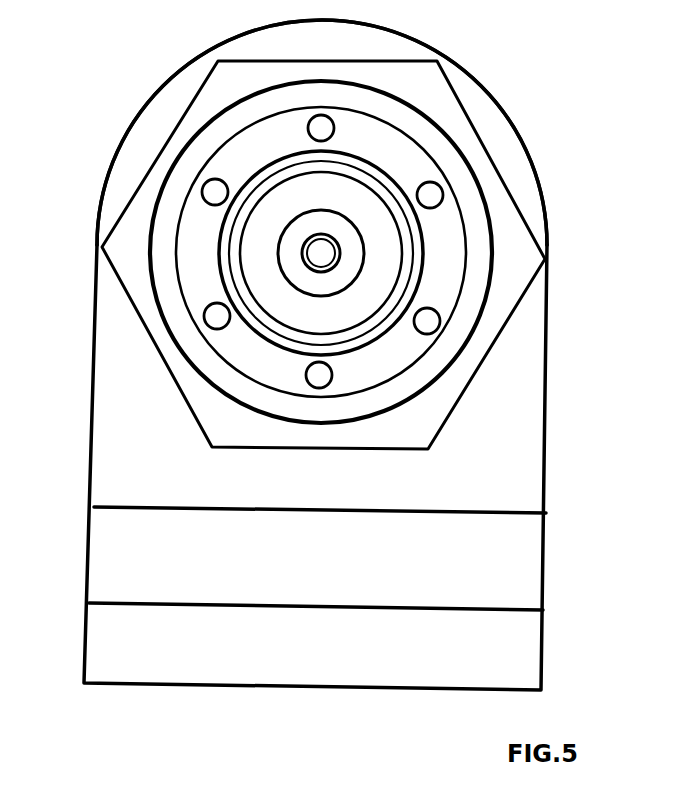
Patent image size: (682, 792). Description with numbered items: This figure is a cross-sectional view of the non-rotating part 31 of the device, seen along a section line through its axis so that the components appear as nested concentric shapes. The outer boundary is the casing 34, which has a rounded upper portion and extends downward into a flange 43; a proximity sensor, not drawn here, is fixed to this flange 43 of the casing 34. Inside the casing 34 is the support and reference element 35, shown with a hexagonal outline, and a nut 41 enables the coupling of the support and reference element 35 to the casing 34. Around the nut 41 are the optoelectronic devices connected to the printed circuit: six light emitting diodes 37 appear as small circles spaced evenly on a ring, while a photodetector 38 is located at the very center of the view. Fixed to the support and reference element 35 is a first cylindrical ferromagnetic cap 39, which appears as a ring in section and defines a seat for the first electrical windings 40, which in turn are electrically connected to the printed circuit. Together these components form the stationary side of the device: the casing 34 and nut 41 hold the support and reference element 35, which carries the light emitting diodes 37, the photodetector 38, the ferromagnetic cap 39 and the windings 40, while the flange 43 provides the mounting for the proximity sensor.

The non-rotating part 31 is at (130, 75).
The casing 34 is at (120, 177).
The support and reference element 35 is at (453, 170).
The light emitting diodes 37 is at (440, 322).
The photodetector 38 is at (325, 253).
The first cylindrical ferromagnetic cap 39 is at (407, 242).
The first electrical windings 40 is at (377, 282).
The nut 41 is at (187, 372).
The flange 43 is at (110, 570).